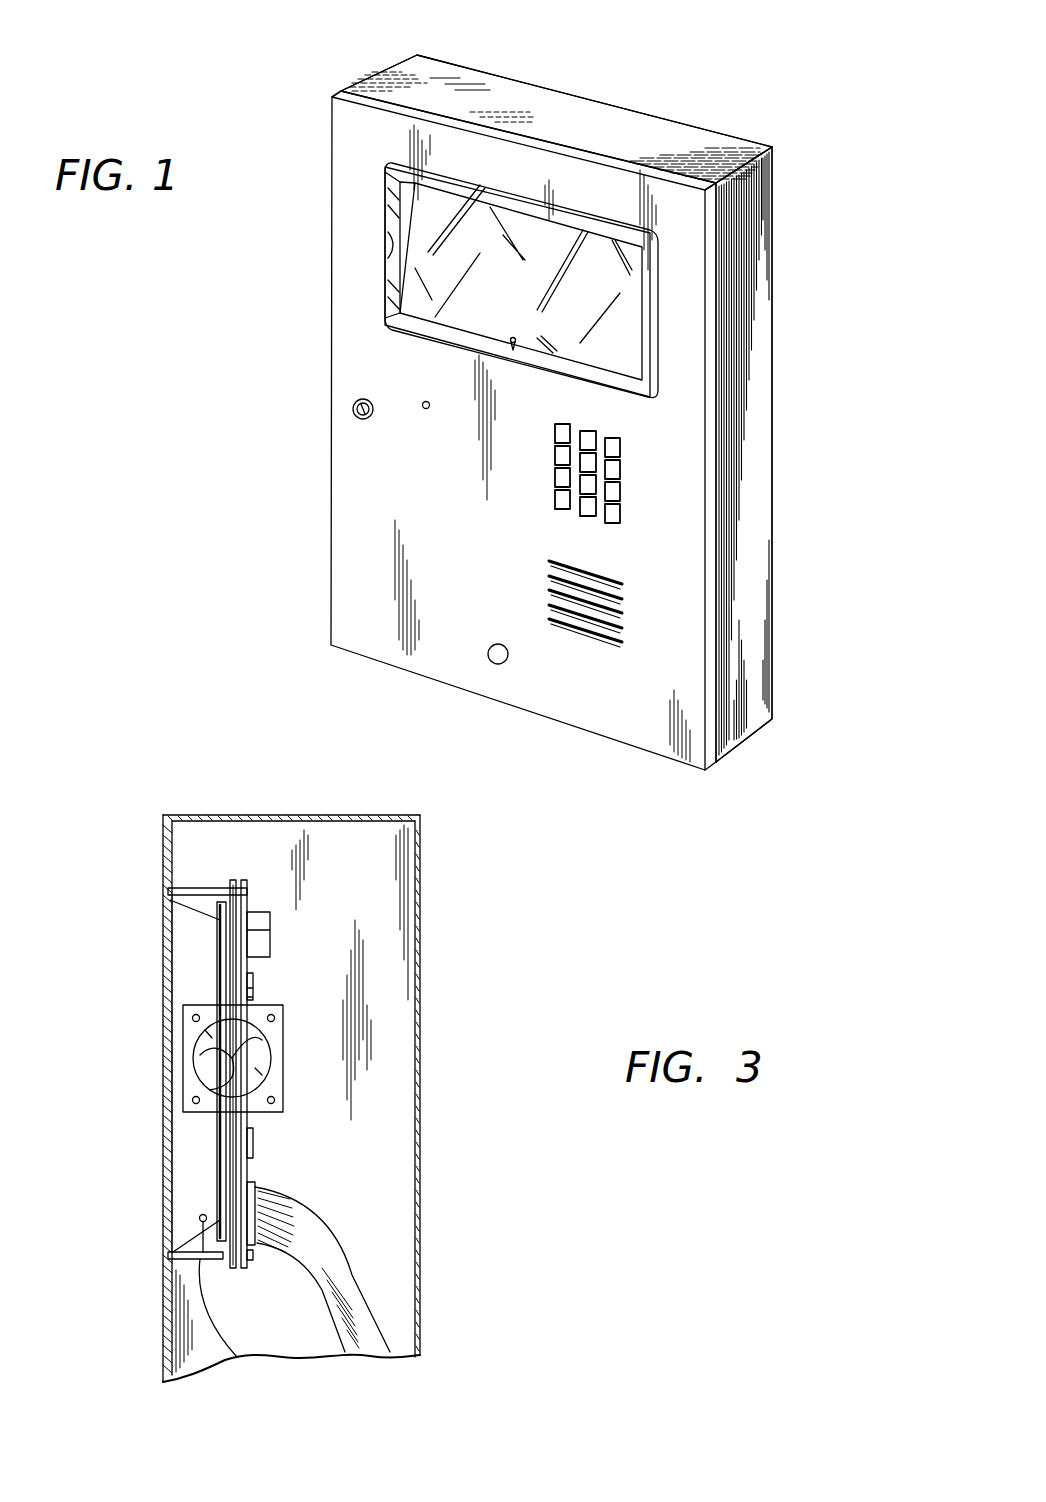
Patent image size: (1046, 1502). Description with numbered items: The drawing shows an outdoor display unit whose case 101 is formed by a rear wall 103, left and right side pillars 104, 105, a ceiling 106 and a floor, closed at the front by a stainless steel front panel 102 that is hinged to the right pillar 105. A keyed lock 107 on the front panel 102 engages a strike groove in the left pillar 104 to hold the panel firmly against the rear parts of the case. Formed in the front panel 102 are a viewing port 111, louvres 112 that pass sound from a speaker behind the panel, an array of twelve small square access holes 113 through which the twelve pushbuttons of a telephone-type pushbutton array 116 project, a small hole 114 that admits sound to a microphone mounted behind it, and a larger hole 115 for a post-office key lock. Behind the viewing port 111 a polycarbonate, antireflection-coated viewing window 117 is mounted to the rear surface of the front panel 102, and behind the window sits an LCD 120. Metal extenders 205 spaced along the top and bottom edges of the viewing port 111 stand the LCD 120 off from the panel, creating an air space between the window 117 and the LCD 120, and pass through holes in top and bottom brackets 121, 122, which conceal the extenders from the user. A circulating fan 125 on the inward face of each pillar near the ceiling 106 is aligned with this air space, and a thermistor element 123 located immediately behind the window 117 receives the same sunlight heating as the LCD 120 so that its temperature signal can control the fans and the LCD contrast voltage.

In FIG. 1, the case 101 is at (790, 378).
In FIG. 1, the front panel 102 is at (623, 713).
In FIG. 1, the rear wall 103 is at (775, 481).
In FIG. 3, the rear wall 103 is at (420, 1150).
In FIG. 1, the left side pillar 104 is at (372, 70).
In FIG. 3, the left side pillar 104 is at (188, 840).
In FIG. 1, the right side pillar 105 is at (750, 567).
In FIG. 1, the ceiling 106 is at (645, 130).
In FIG. 3, the ceiling 106 is at (207, 815).
In FIG. 1, the keyed lock 107 is at (352, 410).
In FIG. 1, the viewing port 111 is at (632, 374).
In FIG. 3, the viewing port 111 is at (170, 900).
In FIG. 1, the louvres 112 is at (548, 594).
In FIG. 1, the square access holes 113 is at (621, 490).
In FIG. 1, the small hole 114 is at (425, 410).
In FIG. 1, the larger hole 115 is at (490, 665).
In FIG. 1, the pushbutton array 116 is at (588, 510).
In FIG. 1, the viewing window 117 is at (462, 226).
In FIG. 3, the viewing window 117 is at (168, 1030).
In FIG. 1, the LCD 120 is at (542, 288).
In FIG. 3, the LCD 120 is at (222, 1128).
In FIG. 1, the top bracket 121 is at (388, 175).
In FIG. 3, the top bracket 121 is at (190, 912).
In FIG. 1, the bottom bracket 122 is at (410, 322).
In FIG. 3, the bottom bracket 122 is at (187, 1235).
In FIG. 1, the thermistor element 123 is at (512, 336).
In FIG. 3, the thermistor element 123 is at (200, 1212).
In FIG. 1, the circulating fan 125 is at (393, 240).
In FIG. 3, the circulating fan 125 is at (285, 1020).
In FIG. 3, the metal extenders 205 is at (212, 887).